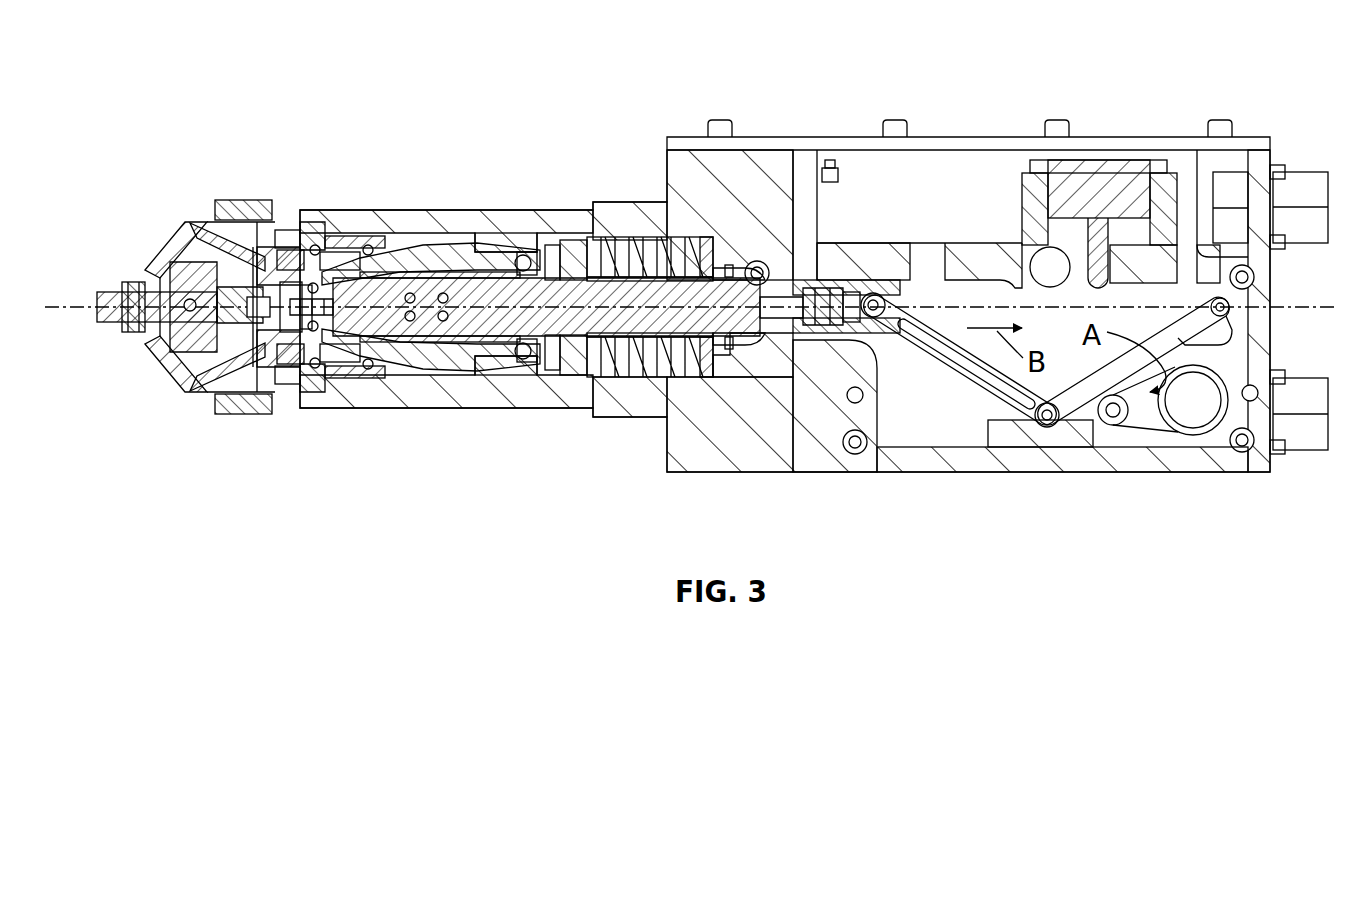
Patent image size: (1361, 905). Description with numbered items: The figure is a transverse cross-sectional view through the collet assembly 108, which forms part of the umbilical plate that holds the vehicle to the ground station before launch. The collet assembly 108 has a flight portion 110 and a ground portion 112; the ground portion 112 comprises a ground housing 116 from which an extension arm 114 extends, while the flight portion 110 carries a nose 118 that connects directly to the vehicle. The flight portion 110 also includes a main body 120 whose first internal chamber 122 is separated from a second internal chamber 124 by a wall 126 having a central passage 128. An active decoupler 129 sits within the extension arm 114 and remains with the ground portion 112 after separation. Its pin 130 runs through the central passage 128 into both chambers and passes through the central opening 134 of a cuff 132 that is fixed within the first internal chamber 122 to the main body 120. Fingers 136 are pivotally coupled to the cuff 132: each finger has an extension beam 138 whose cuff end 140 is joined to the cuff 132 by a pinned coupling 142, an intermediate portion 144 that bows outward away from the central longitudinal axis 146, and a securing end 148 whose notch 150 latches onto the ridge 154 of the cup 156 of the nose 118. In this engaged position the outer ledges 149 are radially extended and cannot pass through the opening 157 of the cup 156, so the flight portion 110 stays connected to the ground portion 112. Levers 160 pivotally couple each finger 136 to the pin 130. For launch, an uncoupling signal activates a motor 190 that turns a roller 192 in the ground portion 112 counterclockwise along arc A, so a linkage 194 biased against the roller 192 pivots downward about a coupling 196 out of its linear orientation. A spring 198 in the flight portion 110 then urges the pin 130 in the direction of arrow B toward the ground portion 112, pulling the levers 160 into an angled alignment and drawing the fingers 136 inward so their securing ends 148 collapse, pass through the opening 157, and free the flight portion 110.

The collet assembly 108 is at (232, 153).
The flight portion 110 is at (260, 442).
The ground portion 112 is at (1330, 91).
The extension arm 114 is at (375, 212).
The ground housing 116 is at (1108, 472).
The nose 118 is at (172, 242).
The main body 120 is at (512, 213).
The first internal chamber 122 is at (322, 272).
The second internal chamber 124 is at (625, 362).
The wall 126 is at (575, 210).
The central passage 128 is at (575, 345).
The active decoupler 129 is at (612, 298).
The pin 130 is at (672, 334).
The cuff 132 is at (545, 376).
The central opening 134 is at (545, 240).
The fingers 136 is at (380, 250).
The extension beam 138 is at (388, 372).
The cuff end 140 is at (482, 348).
The pinned coupling 142 is at (518, 356).
The intermediate portion 144 is at (330, 364).
The central longitudinal axis 146 is at (80, 316).
The securing end 148 is at (260, 397).
The outer ledges 149 is at (284, 208).
The notch 150 is at (286, 383).
The ridge 154 is at (305, 228).
The cup 156 is at (222, 242).
The opening 157 is at (332, 256).
The levers 160 is at (440, 238).
The motor 190 is at (1298, 452).
The roller 192 is at (1190, 400).
The linkage 194 is at (985, 418).
The coupling 196 is at (1045, 428).
The spring 198 is at (655, 340).